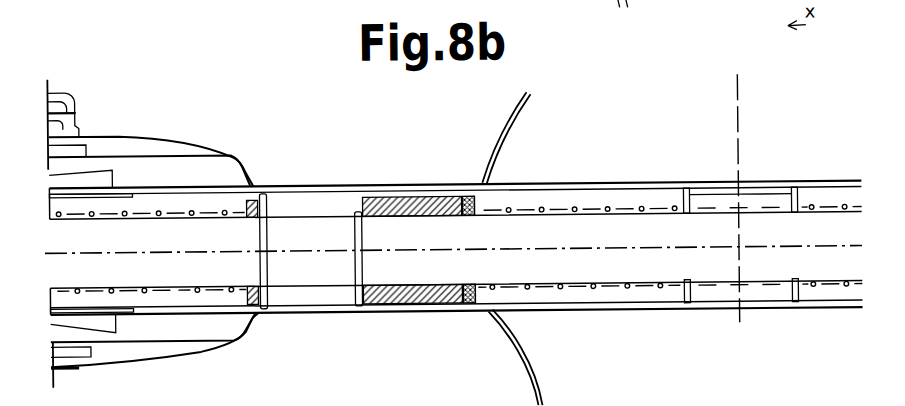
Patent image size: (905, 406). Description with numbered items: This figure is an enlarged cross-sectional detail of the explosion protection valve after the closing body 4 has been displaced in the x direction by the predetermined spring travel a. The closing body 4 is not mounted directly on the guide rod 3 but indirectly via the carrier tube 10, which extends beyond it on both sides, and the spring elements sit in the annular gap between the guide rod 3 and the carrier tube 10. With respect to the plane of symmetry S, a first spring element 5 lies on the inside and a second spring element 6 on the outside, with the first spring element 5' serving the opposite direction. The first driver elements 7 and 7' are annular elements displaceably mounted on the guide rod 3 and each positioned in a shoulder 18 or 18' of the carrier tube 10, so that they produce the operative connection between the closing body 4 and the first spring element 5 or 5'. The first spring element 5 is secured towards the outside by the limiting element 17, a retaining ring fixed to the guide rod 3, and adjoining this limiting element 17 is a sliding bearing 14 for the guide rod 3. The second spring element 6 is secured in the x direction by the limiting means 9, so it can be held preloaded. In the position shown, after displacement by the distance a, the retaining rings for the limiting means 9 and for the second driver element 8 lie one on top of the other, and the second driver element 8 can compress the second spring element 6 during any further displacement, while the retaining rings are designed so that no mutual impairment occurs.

The guide rod 3 is at (293, 272).
The closing body 4 is at (519, 124).
The first spring element 5 is at (629, 337).
The first spring element 5' is at (832, 334).
The second spring element 6 is at (150, 292).
The first driver element 7 is at (690, 176).
The first driver element 7' is at (792, 176).
The second driver element 8 is at (266, 197).
The limiting means 9 is at (270, 212).
The carrier tube 10 is at (400, 196).
The sliding bearing 14 is at (414, 303).
The limiting element 17 is at (359, 283).
The shoulder 18 is at (669, 134).
The shoulder 18' is at (802, 133).
The plane of symmetry S is at (736, 182).